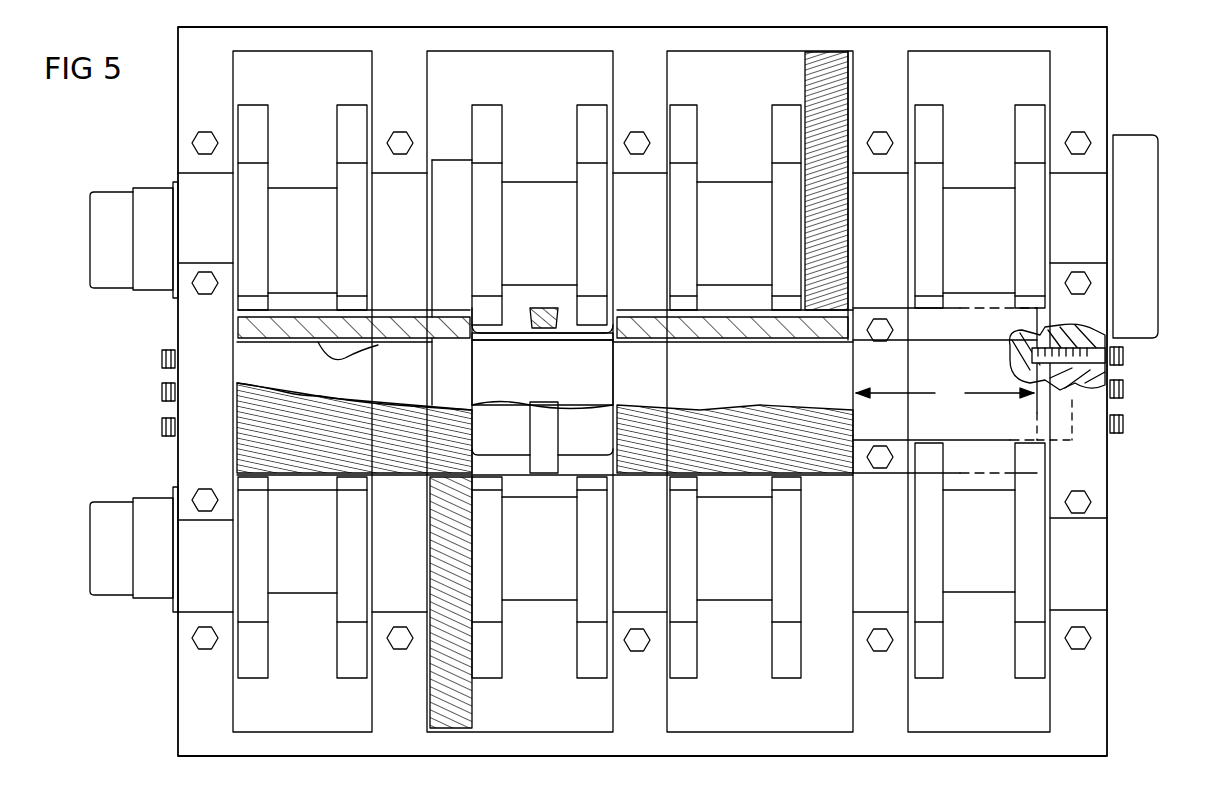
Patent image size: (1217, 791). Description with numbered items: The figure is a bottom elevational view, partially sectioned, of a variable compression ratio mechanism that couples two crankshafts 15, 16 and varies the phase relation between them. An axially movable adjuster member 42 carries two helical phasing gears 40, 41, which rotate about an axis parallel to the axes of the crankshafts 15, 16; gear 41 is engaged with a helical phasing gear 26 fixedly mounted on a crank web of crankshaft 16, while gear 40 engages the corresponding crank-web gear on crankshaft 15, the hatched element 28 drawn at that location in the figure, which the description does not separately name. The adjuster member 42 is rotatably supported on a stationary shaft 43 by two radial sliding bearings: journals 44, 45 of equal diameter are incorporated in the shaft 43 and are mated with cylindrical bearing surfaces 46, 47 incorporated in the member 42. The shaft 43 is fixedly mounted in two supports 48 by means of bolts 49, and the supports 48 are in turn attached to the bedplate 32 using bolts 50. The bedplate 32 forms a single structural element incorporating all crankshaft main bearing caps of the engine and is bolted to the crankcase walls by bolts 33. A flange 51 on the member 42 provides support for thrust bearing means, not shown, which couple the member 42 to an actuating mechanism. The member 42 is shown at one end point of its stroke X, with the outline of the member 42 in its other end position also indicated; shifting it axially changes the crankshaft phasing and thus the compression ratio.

The crankshaft 15 is at (535, 580).
The crankshaft 16 is at (733, 192).
The helical phasing gear 26 is at (805, 68).
The gear 28 is at (468, 706).
The bedplate 32 is at (867, 702).
The bolts 33 is at (195, 143).
The helical phasing gear 40 is at (322, 462).
The helical phasing gear 41 is at (745, 462).
The axially movable adjuster member 42 is at (572, 440).
The stationary shaft 43 is at (962, 355).
The journal 44 is at (457, 383).
The journal 45 is at (855, 372).
The cylindrical bearing surface 46 is at (350, 350).
The cylindrical bearing surface 47 is at (680, 342).
The support 48 is at (188, 337).
The bolts 49 is at (162, 393).
The bolts 50 is at (200, 290).
The flange 51 is at (541, 468).